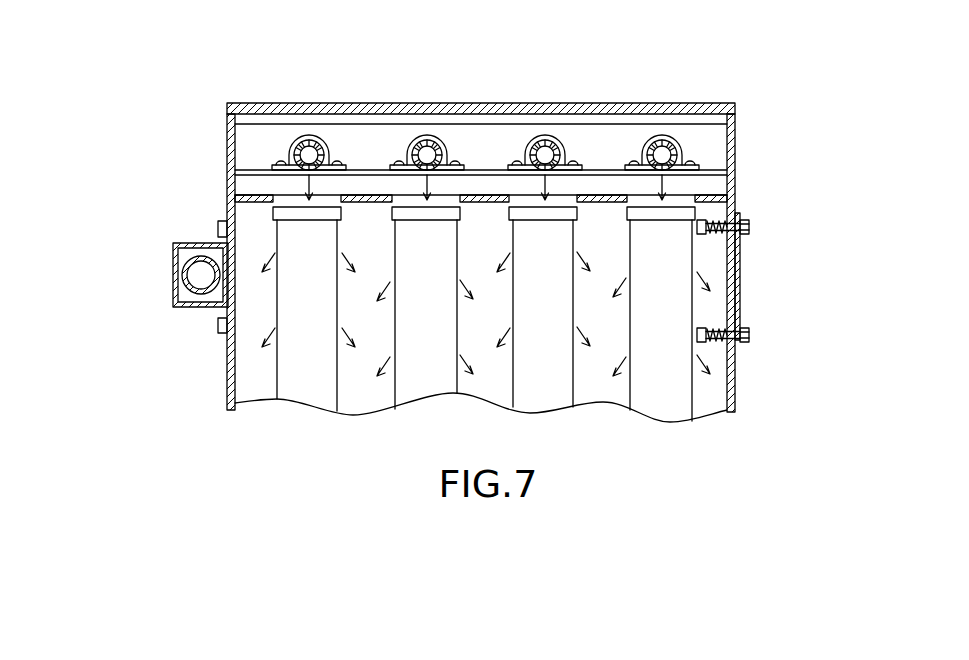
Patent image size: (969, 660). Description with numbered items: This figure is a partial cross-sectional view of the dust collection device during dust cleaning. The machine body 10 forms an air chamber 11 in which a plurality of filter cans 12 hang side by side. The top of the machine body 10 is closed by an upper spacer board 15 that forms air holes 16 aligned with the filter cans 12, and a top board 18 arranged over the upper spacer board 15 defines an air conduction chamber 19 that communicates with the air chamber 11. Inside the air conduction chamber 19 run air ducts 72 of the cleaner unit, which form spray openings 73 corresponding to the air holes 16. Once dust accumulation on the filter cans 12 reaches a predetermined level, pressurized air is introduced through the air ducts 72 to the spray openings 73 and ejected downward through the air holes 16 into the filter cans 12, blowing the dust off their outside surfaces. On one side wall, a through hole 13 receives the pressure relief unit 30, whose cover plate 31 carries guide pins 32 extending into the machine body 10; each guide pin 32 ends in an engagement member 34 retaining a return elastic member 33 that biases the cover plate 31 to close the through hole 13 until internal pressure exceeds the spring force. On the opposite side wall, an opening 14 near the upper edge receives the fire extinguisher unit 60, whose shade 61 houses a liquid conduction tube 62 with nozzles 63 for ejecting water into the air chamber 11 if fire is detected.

The machine body 10 is at (235, 372).
The air chamber 11 is at (352, 248).
The filter cans 12 is at (282, 382).
The through hole 13 is at (743, 257).
The opening 14 is at (224, 255).
The upper spacer board 15 is at (229, 168).
The air holes 16 is at (278, 197).
The top board 18 is at (453, 107).
The air conduction chamber 19 is at (478, 156).
The pressure relief unit 30 is at (716, 295).
The cover plate 31 is at (742, 285).
The guide pins 32 is at (742, 323).
The return elastic member 33 is at (746, 334).
The engagement member 34 is at (709, 332).
The fire extinguisher unit 60 is at (157, 282).
The shade 61 is at (186, 263).
The liquid conduction tube 62 is at (188, 290).
The nozzles 63 is at (222, 307).
The air ducts 72 is at (300, 140).
The spray openings 73 is at (338, 168).